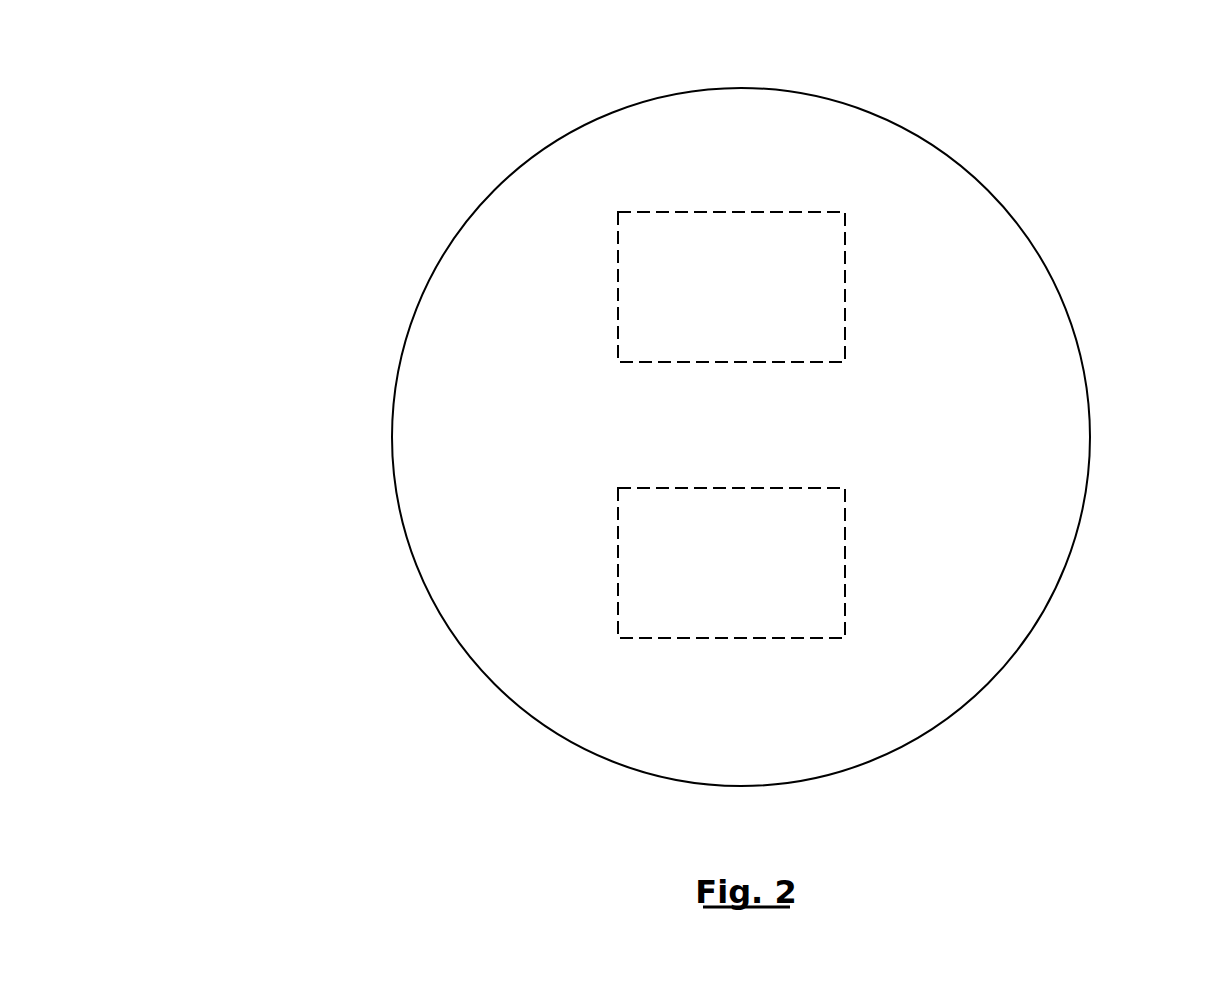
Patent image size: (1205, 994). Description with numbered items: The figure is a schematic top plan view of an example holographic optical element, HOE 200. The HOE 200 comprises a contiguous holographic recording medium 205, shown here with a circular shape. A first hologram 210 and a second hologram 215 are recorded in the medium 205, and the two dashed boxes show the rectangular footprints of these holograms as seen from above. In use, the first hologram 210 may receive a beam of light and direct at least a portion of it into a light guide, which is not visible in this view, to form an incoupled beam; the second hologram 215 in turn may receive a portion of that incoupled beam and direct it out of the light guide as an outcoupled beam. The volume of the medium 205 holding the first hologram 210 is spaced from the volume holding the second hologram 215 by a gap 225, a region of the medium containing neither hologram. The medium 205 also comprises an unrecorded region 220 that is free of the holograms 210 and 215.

The HOE 200 is at (256, 96).
The contiguous holographic recording medium 205 is at (1045, 302).
The first hologram 210 is at (632, 560).
The second hologram 215 is at (630, 282).
The unrecorded region 220 is at (543, 680).
The gap 225 is at (720, 428).